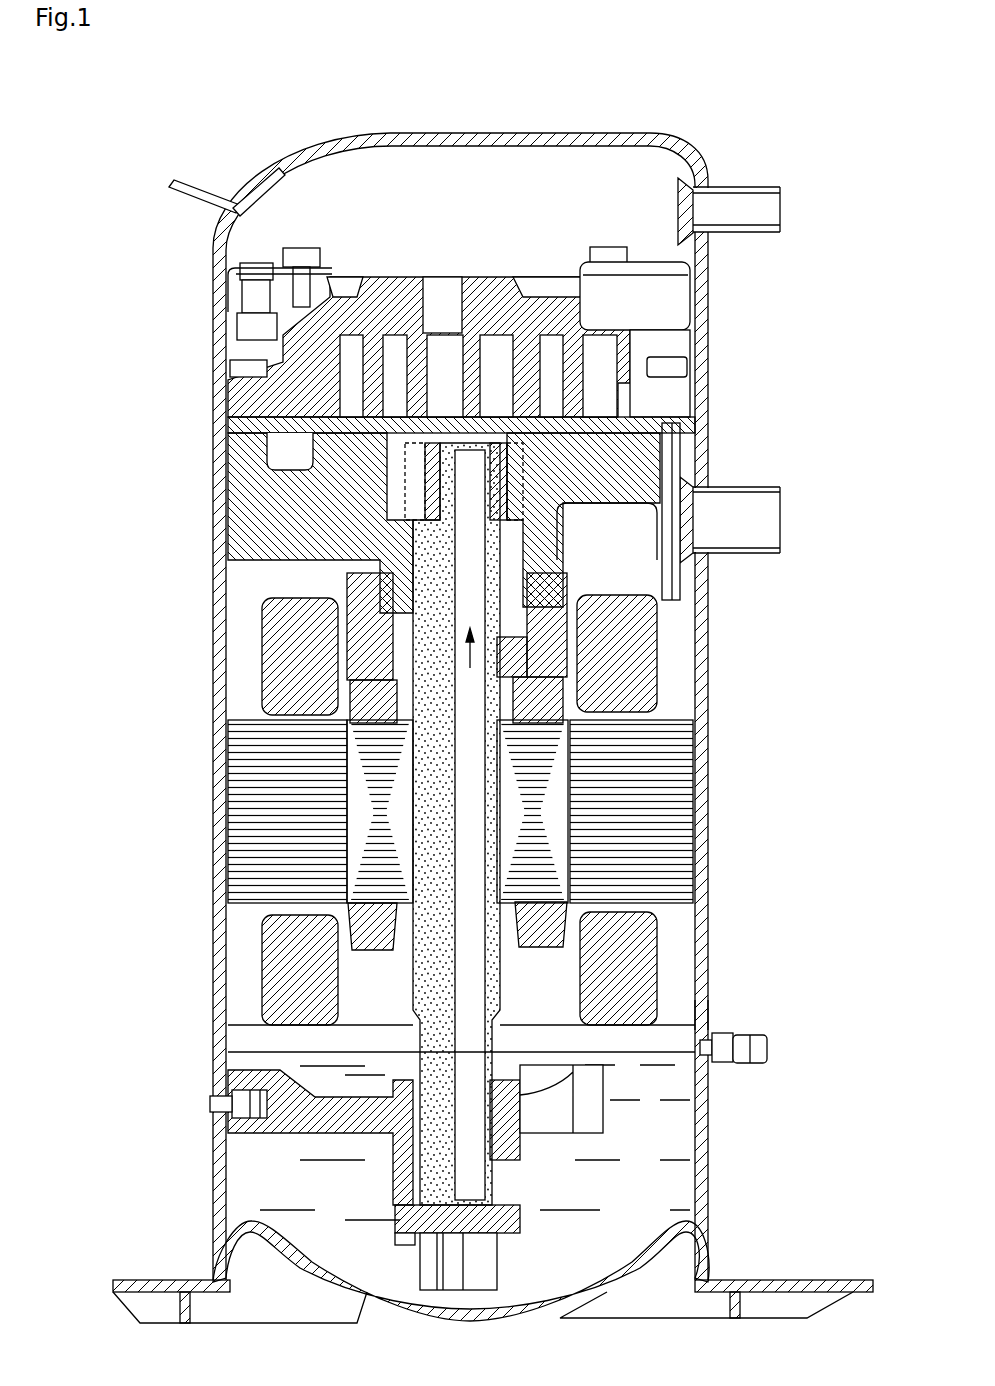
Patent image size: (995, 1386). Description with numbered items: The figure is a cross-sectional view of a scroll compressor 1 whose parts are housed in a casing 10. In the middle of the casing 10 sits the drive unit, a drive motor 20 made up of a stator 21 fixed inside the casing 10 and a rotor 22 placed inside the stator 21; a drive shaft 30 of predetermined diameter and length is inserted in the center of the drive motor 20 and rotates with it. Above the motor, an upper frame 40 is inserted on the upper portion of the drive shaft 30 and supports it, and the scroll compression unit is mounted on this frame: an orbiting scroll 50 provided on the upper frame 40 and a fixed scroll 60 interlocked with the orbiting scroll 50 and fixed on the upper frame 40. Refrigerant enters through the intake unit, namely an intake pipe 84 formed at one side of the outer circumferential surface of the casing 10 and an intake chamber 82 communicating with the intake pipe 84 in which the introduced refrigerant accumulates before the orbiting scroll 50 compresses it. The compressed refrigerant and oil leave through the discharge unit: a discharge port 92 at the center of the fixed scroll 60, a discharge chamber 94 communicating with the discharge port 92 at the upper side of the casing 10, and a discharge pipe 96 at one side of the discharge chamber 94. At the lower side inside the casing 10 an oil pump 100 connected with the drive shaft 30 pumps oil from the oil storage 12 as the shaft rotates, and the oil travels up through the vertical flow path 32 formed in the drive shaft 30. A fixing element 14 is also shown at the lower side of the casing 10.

The scroll compressor 1 is at (120, 140).
The casing 10 is at (702, 635).
The oil storage 12 is at (684, 1025).
The fixing bolt 14 is at (720, 1067).
The drive motor 20 is at (528, 810).
The stator 21 is at (625, 823).
The rotor 22 is at (555, 786).
The drive shaft 30 is at (461, 824).
The vertical flow path 32 is at (473, 925).
The upper frame 40 is at (232, 505).
The orbiting scroll 50 is at (278, 424).
The fixed scroll 60 is at (378, 275).
The intake chamber 82 is at (650, 524).
The intake pipe 84 is at (775, 517).
The discharge port 92 is at (438, 275).
The discharge chamber 94 is at (540, 161).
The discharge pipe 96 is at (738, 198).
The oil pump 100 is at (372, 1208).